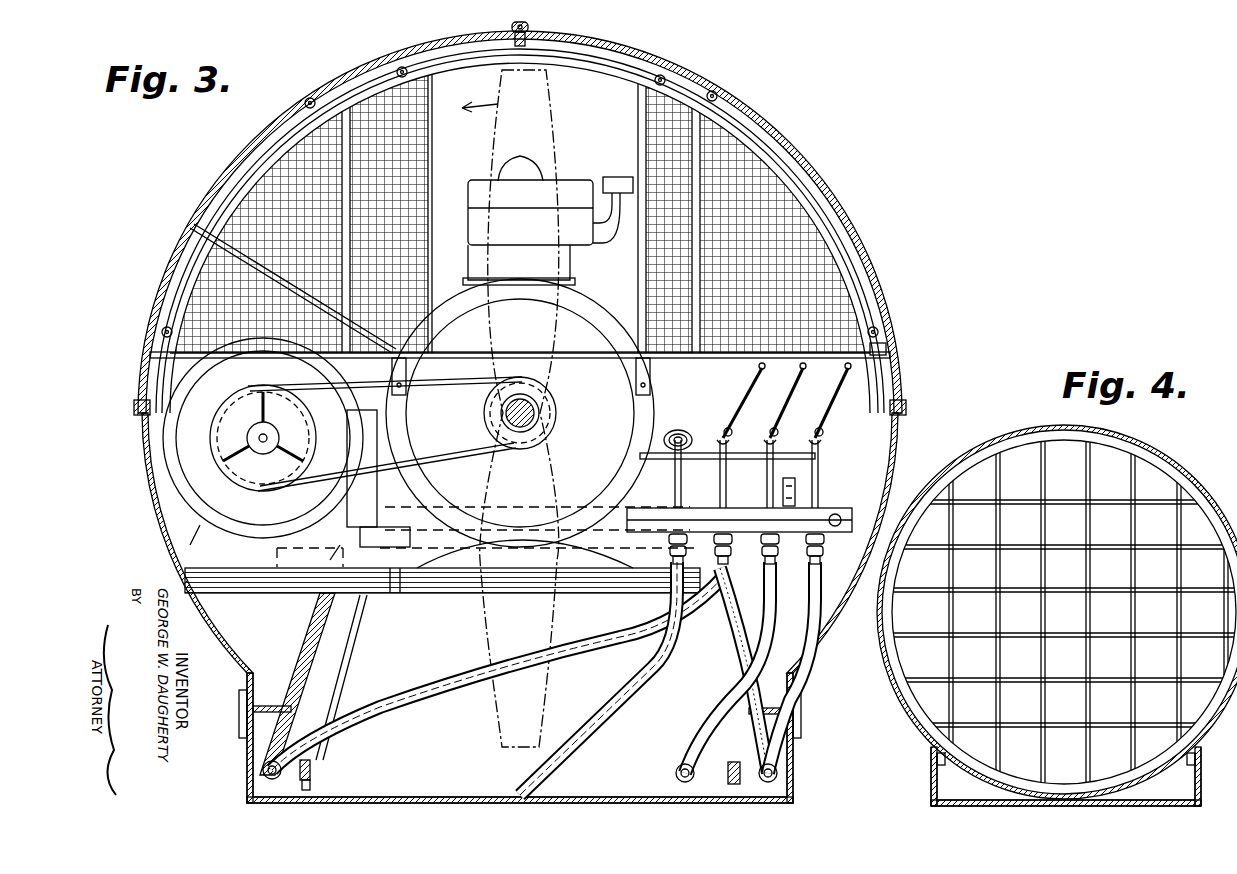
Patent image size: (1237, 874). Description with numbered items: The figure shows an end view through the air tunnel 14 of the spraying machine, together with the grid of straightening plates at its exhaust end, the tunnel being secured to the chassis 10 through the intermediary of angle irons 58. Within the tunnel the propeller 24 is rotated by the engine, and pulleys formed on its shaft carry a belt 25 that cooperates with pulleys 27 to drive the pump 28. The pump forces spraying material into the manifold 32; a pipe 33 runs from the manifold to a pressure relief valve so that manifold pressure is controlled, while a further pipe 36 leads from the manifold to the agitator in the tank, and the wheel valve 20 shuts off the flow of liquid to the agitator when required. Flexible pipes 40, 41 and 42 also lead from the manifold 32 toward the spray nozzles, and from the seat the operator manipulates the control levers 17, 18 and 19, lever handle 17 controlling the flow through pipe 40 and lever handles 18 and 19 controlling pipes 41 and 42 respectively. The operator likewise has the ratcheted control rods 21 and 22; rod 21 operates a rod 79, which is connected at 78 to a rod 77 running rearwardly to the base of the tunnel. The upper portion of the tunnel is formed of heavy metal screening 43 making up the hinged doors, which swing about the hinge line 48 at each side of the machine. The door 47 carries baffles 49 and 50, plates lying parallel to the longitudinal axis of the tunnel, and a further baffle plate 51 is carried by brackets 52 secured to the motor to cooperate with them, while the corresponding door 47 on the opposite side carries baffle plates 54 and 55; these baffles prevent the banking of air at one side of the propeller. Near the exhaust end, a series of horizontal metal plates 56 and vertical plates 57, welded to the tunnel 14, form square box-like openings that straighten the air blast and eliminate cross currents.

In FIG. 3, the chassis 10 is at (247, 758).
In FIG. 4, the chassis 10 is at (931, 782).
In FIG. 3, the air tunnel 14 is at (820, 149).
In FIG. 4, the air tunnel 14 is at (1196, 478).
In FIG. 3, the control lever 17 is at (832, 405).
In FIG. 3, the control lever 18 is at (784, 408).
In FIG. 3, the control lever 19 is at (740, 396).
In FIG. 3, the valve 20 is at (680, 430).
In FIG. 3, the ratcheted control rod 21 is at (470, 420).
In FIG. 3, the ratcheted control rod 22 is at (798, 486).
In FIG. 3, the propeller 24 is at (545, 128).
In FIG. 3, the belt 25 is at (436, 462).
In FIG. 3, the pulley 27 is at (220, 470).
In FIG. 3, the pump 28 is at (165, 452).
In FIG. 3, the manifold 32 is at (828, 505).
In FIG. 3, the pipe 33 is at (840, 514).
In FIG. 3, the pipe 36 is at (583, 757).
In FIG. 3, the flexible pipe 40 is at (808, 625).
In FIG. 3, the flexible pipe 41 is at (742, 722).
In FIG. 3, the flexible pipe 42 is at (436, 688).
In FIG. 3, the metal screening 43 is at (226, 184).
In FIG. 3, the door 47 is at (252, 150).
In FIG. 3, the hinge line 48 is at (530, 26).
In FIG. 3, the baffle 49 is at (882, 346).
In FIG. 3, the baffle 50 is at (718, 97).
In FIG. 3, the baffle plate 51 is at (575, 358).
In FIG. 3, the bracket 52 is at (404, 375).
In FIG. 3, the baffle plate 54 is at (305, 104).
In FIG. 3, the baffle plate 55 is at (194, 226).
In FIG. 4, the horizontal metal plate 56 is at (1112, 680).
In FIG. 4, the vertical plate 57 is at (1130, 535).
In FIG. 3, the angle iron 58 is at (240, 680).
In FIG. 4, the angle iron 58 is at (930, 752).
In FIG. 3, the rod 77 is at (316, 790).
In FIG. 3, the connection 78 is at (316, 768).
In FIG. 3, the rod 79 is at (335, 660).